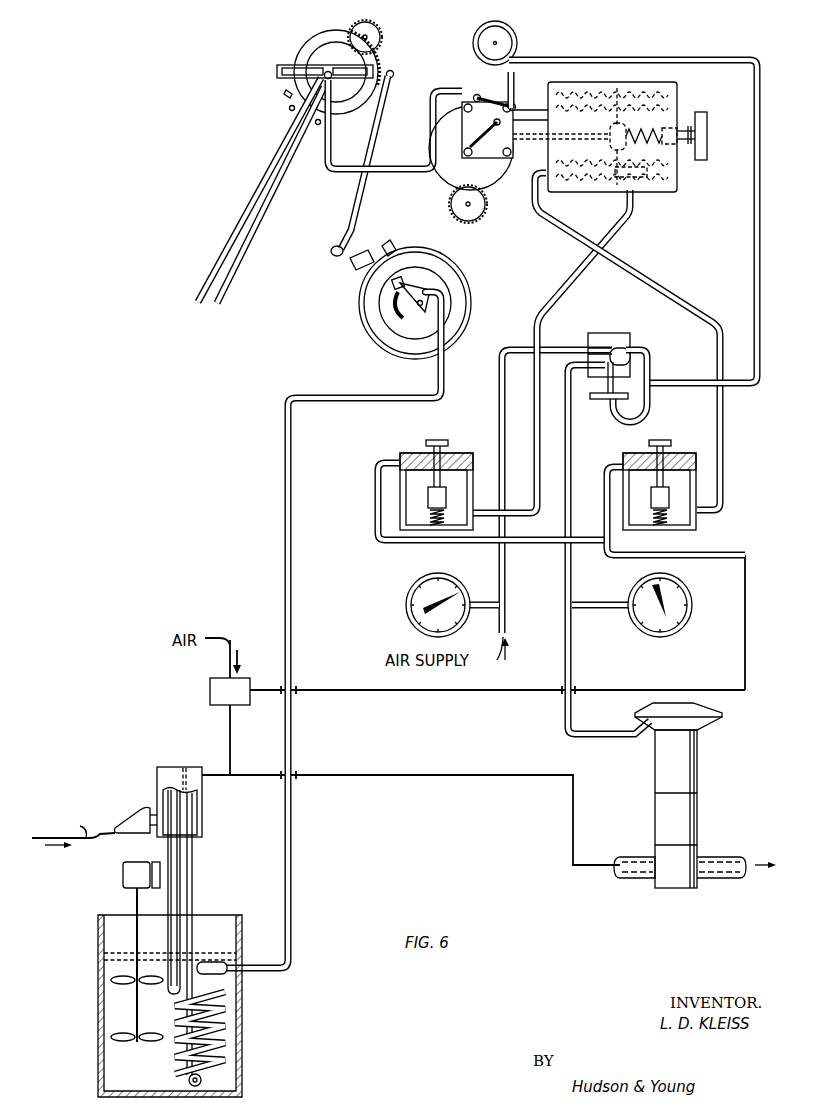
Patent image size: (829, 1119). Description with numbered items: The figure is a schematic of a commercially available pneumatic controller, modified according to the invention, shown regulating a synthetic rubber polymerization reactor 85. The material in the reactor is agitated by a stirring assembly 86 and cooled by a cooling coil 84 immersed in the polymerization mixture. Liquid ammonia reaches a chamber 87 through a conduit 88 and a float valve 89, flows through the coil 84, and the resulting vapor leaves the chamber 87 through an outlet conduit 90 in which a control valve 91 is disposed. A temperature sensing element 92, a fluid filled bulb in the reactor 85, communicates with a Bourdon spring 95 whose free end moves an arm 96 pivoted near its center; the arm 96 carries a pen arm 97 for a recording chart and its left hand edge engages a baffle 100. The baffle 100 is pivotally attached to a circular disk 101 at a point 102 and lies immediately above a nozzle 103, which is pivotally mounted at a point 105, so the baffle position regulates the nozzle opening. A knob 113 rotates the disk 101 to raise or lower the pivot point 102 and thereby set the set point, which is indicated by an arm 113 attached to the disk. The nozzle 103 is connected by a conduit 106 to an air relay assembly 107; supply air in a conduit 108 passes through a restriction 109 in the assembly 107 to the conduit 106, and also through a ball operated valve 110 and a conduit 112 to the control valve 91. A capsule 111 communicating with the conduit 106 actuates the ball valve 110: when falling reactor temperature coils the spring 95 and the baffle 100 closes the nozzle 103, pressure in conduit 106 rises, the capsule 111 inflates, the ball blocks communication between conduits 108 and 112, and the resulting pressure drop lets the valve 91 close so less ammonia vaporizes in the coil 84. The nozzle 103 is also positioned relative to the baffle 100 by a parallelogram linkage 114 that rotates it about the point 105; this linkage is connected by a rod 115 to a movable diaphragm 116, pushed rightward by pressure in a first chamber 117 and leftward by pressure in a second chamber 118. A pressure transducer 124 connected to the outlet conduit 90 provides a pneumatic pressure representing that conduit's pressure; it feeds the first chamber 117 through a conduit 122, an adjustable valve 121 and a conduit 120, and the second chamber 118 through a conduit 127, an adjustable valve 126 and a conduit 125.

The cooling coil 84 is at (220, 1050).
The synthetic rubber polymerization reactor 85 is at (101, 980).
The stirring assembly 86 is at (128, 930).
The chamber 87 is at (203, 818).
The conduit 88 is at (101, 840).
The float valve 89 is at (130, 822).
The outlet conduit 90 is at (575, 826).
The control valve 91 is at (700, 835).
The temperature sensing element 92 is at (226, 962).
The Bourdon spring 95 is at (466, 292).
The arm 96 is at (383, 63).
The pen arm 97 is at (209, 280).
The baffle 100 is at (340, 38).
The circular disk 101 is at (306, 43).
The pivot point 102 is at (385, 68).
The nozzle 103 is at (358, 110).
The pivot point 105 is at (514, 96).
The conduit 106 is at (756, 296).
The air relay assembly 107 is at (594, 333).
The conduit 108 is at (500, 437).
The restriction 109 is at (625, 345).
The ball operated valve 110 is at (626, 365).
The capsule 111 is at (607, 396).
The conduit 112 is at (571, 448).
The knob and arm 113 is at (380, 36).
The parallelogram linkage 114 is at (475, 175).
The rod 115 is at (543, 140).
The movable diaphragm 116 is at (612, 140).
The first chamber 117 is at (586, 178).
The second chamber 118 is at (678, 170).
The conduit 120 is at (724, 450).
The adjustable valve 121 is at (628, 450).
The conduit 122 is at (609, 518).
The pressure transducer 124 is at (248, 680).
The conduit 125 is at (552, 298).
The adjustable valve 126 is at (407, 450).
The conduit 127 is at (466, 544).